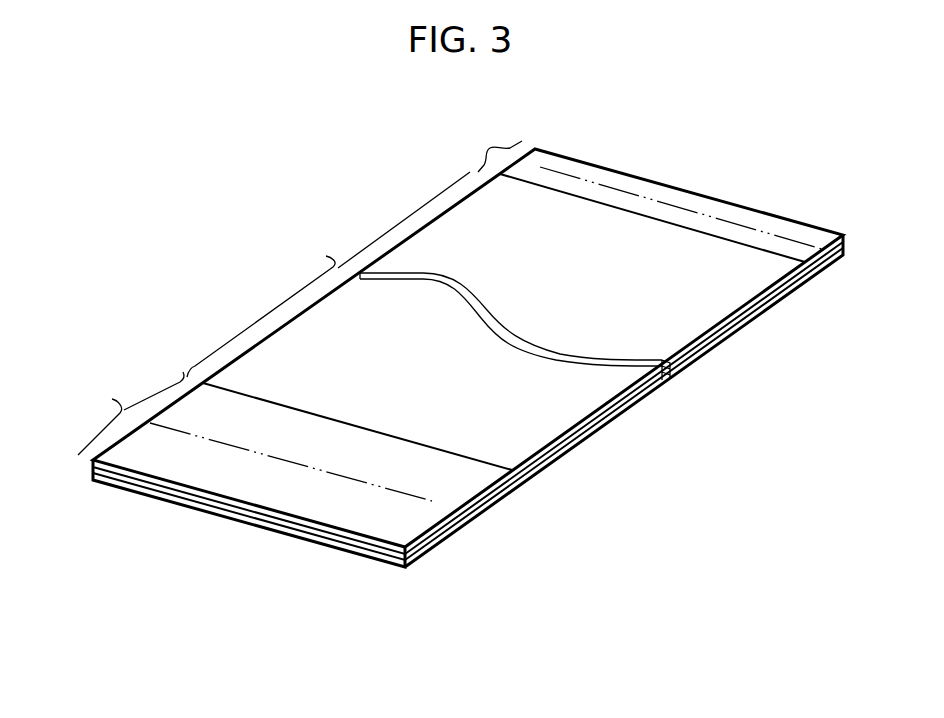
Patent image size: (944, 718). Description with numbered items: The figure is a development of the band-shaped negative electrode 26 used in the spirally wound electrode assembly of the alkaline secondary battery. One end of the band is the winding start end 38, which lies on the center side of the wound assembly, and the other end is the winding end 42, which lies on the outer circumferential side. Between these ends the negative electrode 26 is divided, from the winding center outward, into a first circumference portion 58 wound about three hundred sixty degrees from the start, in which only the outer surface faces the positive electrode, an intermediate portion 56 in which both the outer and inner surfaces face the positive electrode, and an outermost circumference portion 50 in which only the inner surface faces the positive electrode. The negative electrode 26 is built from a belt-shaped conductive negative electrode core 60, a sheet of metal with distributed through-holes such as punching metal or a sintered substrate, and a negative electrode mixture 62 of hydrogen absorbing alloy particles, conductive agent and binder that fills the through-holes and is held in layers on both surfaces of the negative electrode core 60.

The negative electrode 26 is at (333, 195).
The winding start end 38 is at (683, 190).
The winding end 42 is at (218, 493).
The outermost circumference portion 50 is at (131, 413).
The intermediate portion 56 is at (349, 321).
The first circumference portion 58 is at (493, 141).
The negative electrode core 60 is at (580, 442).
The negative electrode mixture 62 is at (318, 468).